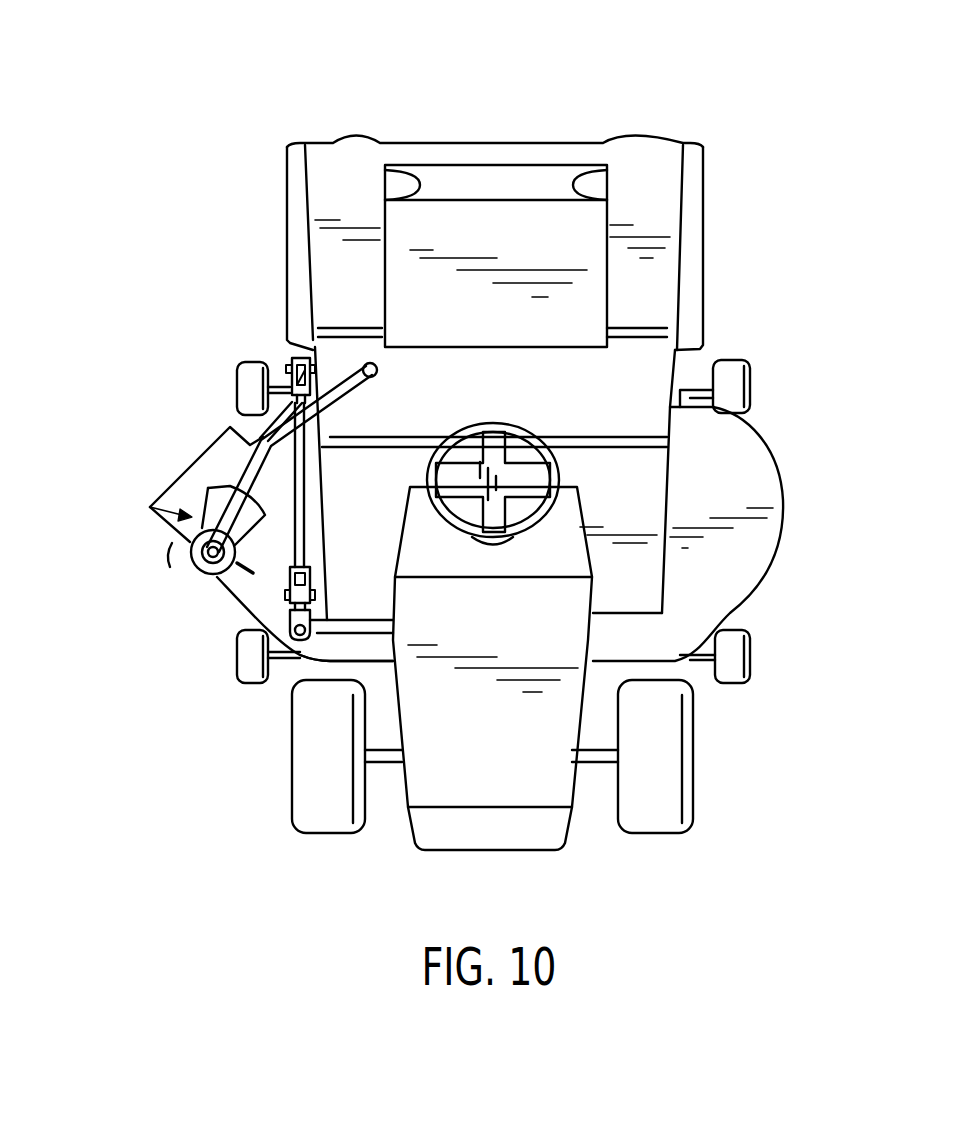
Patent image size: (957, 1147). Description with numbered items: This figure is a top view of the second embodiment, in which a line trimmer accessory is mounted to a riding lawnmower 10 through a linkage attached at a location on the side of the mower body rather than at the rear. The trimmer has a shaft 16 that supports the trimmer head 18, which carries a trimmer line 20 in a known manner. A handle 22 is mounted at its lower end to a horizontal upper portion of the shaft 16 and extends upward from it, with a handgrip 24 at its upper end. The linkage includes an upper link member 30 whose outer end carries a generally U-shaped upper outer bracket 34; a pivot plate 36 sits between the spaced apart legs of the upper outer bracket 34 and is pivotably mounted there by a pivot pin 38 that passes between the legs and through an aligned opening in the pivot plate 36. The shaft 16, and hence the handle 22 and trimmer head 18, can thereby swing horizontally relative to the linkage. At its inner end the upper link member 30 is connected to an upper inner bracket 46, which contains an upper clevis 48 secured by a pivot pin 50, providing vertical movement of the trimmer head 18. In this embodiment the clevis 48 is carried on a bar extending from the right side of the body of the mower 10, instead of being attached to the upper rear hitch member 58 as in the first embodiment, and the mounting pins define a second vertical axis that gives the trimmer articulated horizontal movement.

The lawnmower 10 is at (780, 110).
The shaft 16 is at (247, 457).
The trimmer head 18 is at (150, 507).
The trimmer line 20 is at (201, 561).
The handle 22 is at (330, 400).
The handgrip 24 is at (377, 371).
The upper link member 30 is at (307, 503).
The upper outer bracket 34 is at (293, 360).
The pivot plate 36 is at (298, 358).
The pivot pin 38 is at (317, 367).
The upper inner bracket 46 is at (307, 582).
The upper clevis 48 is at (310, 593).
The pivot pin 50 is at (312, 598).
The upper rear hitch member 58 is at (343, 635).